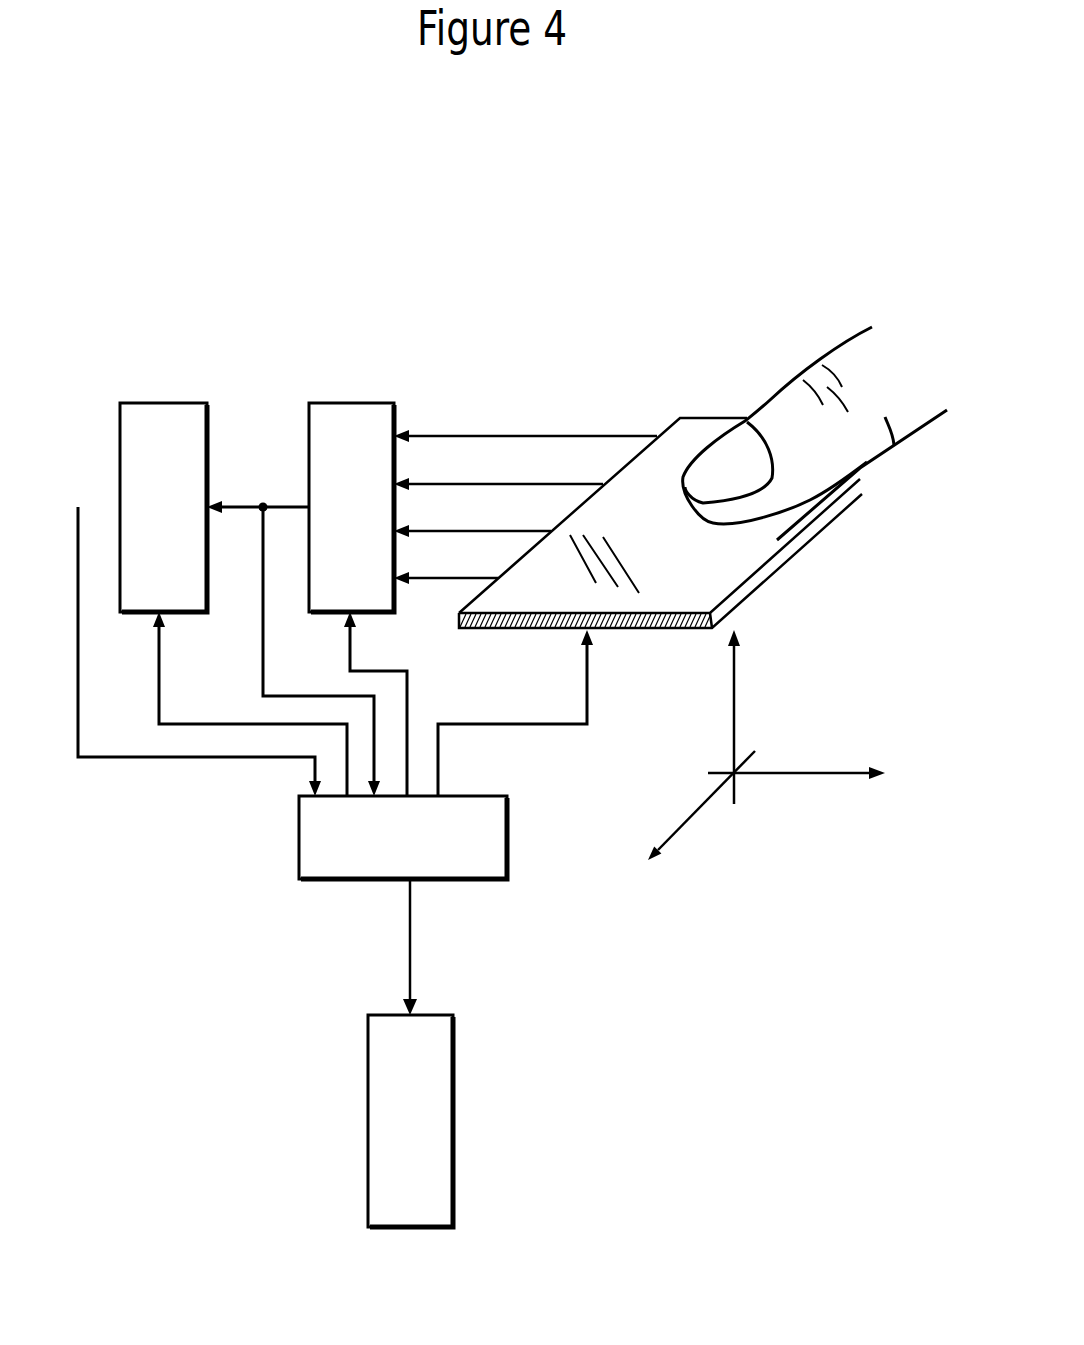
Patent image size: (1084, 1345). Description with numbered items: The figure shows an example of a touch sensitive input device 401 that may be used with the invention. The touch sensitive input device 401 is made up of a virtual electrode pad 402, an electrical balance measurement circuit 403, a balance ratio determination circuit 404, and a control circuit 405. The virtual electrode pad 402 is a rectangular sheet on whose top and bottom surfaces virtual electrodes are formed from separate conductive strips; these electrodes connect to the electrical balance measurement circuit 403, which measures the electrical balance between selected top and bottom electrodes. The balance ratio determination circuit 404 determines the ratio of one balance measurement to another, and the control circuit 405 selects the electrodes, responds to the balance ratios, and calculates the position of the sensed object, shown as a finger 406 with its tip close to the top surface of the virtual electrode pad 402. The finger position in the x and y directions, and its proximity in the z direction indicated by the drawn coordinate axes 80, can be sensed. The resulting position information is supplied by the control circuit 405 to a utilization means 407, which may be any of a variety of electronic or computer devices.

The touch sensitive input device 401 is at (502, 300).
The virtual electrode pad 402 is at (700, 603).
The electrical balance measurement circuit 403 is at (347, 402).
The balance ratio determination circuit 404 is at (157, 402).
The control circuit 405 is at (475, 794).
The finger 406 is at (833, 448).
The utilization means 407 is at (432, 1014).
The coordinate system 80 is at (743, 785).